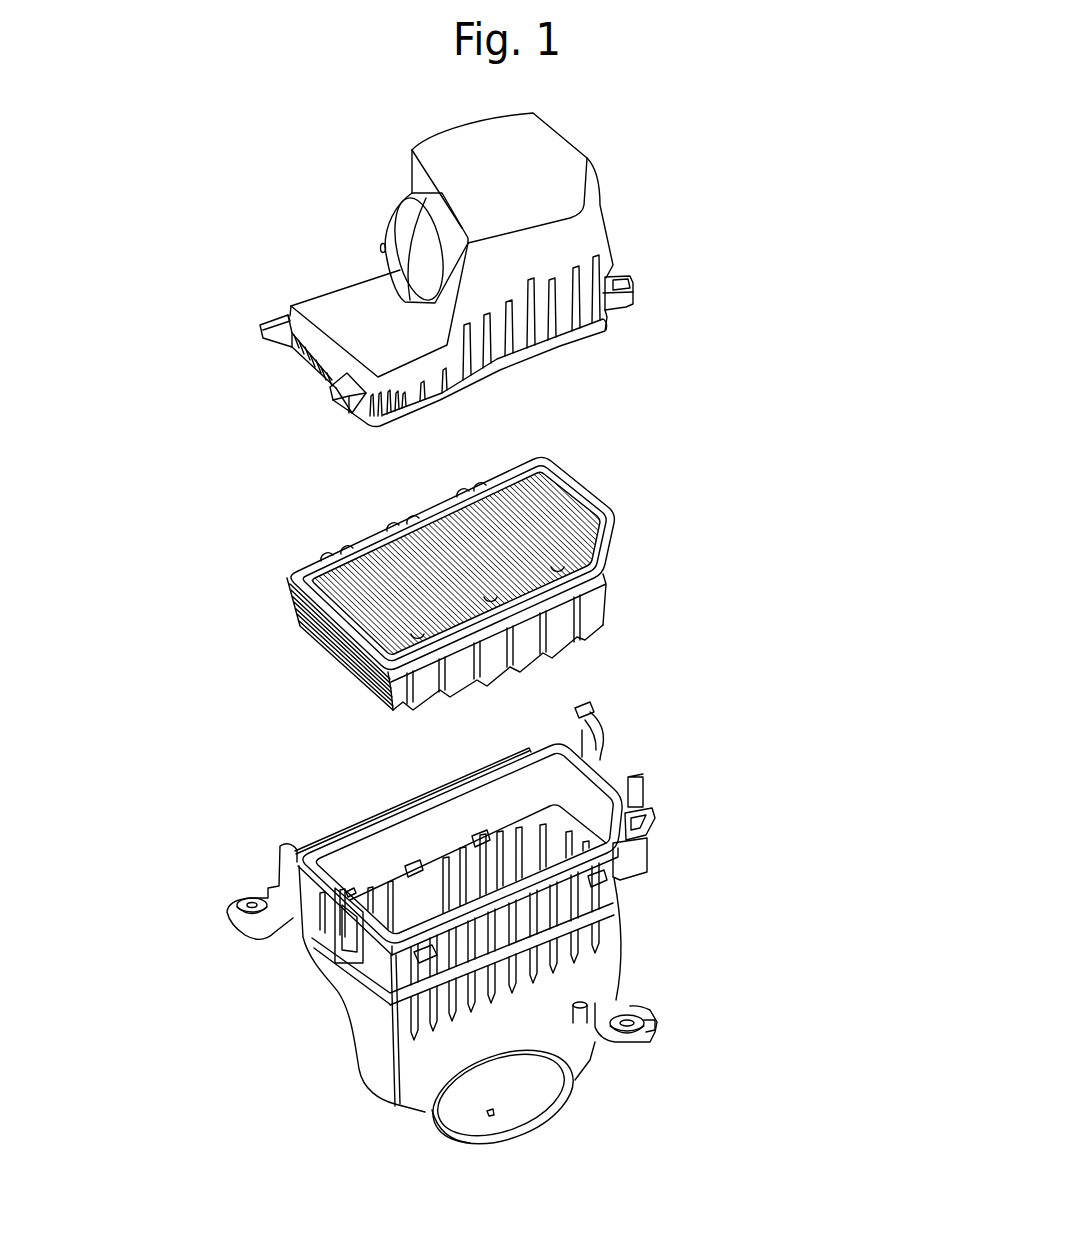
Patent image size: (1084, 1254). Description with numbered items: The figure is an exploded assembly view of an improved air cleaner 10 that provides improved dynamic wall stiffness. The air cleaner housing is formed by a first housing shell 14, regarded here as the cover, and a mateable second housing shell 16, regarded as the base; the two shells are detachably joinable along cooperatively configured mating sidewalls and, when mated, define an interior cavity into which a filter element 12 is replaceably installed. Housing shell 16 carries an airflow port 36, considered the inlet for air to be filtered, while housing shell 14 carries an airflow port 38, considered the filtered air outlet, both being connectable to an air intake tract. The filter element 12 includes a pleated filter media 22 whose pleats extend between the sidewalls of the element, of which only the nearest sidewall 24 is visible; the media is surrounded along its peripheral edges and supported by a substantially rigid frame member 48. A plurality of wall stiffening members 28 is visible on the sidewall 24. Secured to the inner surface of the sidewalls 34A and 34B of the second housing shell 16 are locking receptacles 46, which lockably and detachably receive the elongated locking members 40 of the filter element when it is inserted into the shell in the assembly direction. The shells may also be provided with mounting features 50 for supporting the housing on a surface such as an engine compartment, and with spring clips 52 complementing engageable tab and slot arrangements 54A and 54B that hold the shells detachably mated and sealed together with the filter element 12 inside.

The air cleaner 10 is at (790, 218).
The filter element 12 is at (690, 530).
The first housing shell 14 is at (660, 163).
The second housing shell 16 is at (705, 893).
The pleated filter media 22 is at (545, 498).
The sidewall 24 is at (520, 645).
The wall stiffening members 28 is at (327, 557).
The sidewall 34A is at (528, 862).
The sidewall 34B is at (413, 838).
The airflow port 36 is at (521, 1100).
The airflow port 38 is at (413, 230).
The elongated locking members 40 is at (572, 634).
The locking receptacles 46 is at (477, 833).
The frame member 48 is at (583, 503).
The mounting features 50 is at (230, 923).
The spring clips 52 is at (643, 800).
The tab and slot arrangement 54A is at (270, 327).
The tab and slot arrangement 54B is at (360, 933).